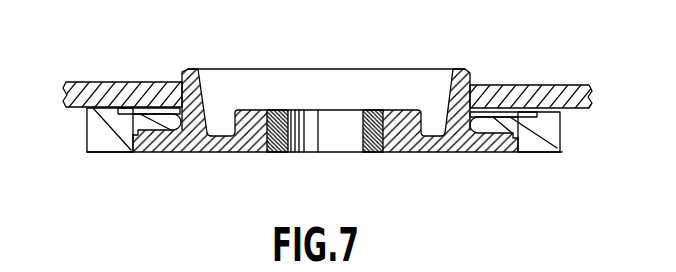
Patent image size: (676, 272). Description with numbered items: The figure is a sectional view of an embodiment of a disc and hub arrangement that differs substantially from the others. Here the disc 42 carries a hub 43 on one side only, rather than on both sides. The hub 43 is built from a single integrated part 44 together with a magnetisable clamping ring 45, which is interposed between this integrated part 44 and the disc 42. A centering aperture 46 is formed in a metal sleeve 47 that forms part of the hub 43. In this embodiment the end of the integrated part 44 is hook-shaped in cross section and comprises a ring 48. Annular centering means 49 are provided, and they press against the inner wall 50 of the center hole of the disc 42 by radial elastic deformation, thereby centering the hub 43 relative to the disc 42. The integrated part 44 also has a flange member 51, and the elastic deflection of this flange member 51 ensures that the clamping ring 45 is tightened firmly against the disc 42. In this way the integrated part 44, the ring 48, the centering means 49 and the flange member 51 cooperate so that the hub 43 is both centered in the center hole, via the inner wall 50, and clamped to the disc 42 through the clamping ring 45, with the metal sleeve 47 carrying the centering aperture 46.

The disc 42 is at (89, 88).
The hub 43 is at (160, 152).
The integrated part 44 is at (232, 152).
The clamping ring 45 is at (107, 130).
The centering aperture 46 is at (334, 140).
The metal sleeve 47 is at (378, 142).
The ring 48 is at (474, 83).
The centering means 49 is at (494, 90).
The inner wall 50 is at (202, 90).
The flange member 51 is at (486, 143).